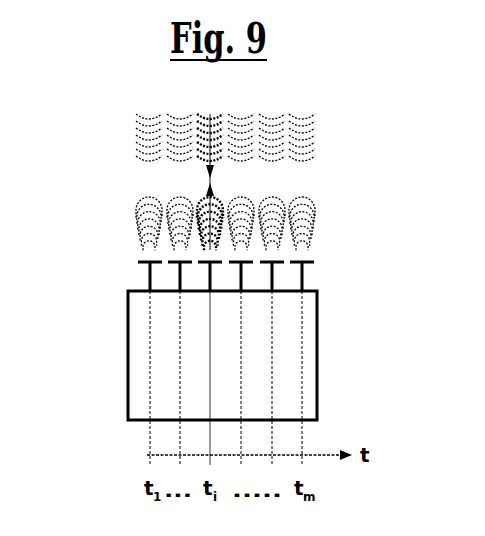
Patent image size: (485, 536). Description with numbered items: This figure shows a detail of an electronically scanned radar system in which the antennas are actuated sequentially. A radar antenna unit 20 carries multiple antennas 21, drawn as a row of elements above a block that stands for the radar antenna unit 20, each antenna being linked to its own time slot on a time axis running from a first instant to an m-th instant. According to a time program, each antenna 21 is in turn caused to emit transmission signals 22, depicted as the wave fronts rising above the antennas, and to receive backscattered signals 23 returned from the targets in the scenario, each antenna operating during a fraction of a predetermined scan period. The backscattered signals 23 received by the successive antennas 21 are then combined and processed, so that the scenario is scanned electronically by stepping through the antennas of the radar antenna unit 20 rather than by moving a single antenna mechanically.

The radar antenna unit 20 is at (330, 306).
The antenna 21 is at (303, 260).
The transmission signal 22 is at (205, 197).
The backscattered signal 23 is at (202, 112).